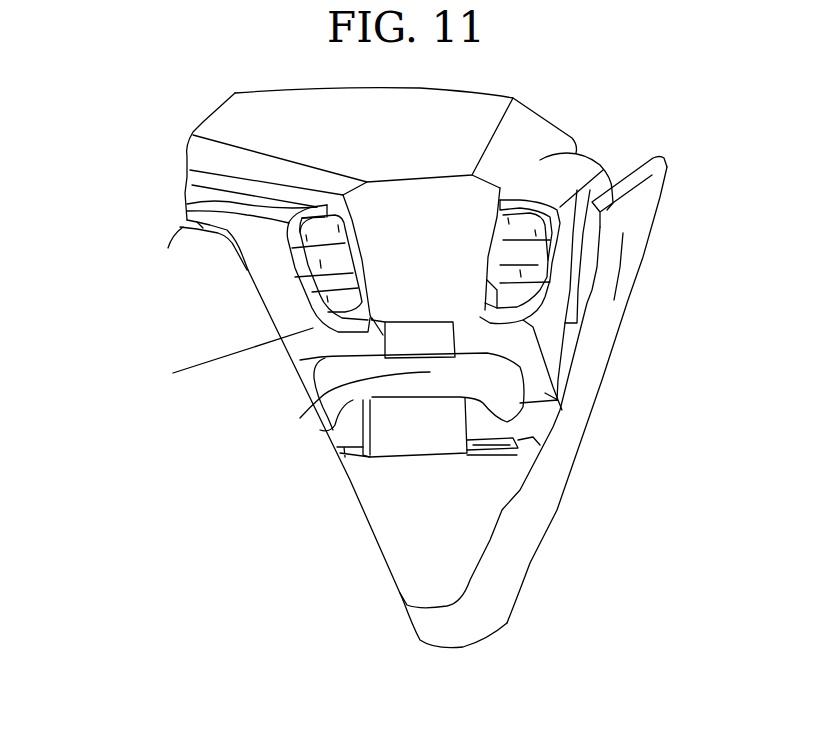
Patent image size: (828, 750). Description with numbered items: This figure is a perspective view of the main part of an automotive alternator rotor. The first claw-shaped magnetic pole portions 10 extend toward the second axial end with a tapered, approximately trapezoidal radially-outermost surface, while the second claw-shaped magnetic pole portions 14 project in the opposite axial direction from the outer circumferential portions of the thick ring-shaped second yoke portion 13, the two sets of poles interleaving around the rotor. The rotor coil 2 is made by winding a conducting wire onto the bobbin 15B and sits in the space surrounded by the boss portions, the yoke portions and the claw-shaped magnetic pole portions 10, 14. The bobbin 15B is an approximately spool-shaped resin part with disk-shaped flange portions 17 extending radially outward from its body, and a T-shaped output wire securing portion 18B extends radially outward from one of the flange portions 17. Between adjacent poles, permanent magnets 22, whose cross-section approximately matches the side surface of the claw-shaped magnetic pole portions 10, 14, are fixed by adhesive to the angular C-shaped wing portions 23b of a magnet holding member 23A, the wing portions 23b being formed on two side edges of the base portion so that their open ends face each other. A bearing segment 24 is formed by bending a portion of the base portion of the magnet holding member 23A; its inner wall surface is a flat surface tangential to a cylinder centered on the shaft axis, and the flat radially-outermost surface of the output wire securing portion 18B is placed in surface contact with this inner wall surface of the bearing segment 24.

The rotor coil 2 is at (540, 423).
The first claw-shaped magnetic pole portion 10 is at (480, 115).
The second yoke portion 13 is at (556, 570).
The second claw-shaped magnetic pole portion 14 is at (640, 253).
The bobbin 15B is at (471, 505).
The flange portion 17 is at (397, 498).
The output wire securing portion 18B is at (298, 420).
The permanent magnet 22 is at (187, 204).
The magnet holding member 23A is at (629, 158).
The wing portion 23b is at (265, 257).
The bearing segment 24 is at (320, 357).